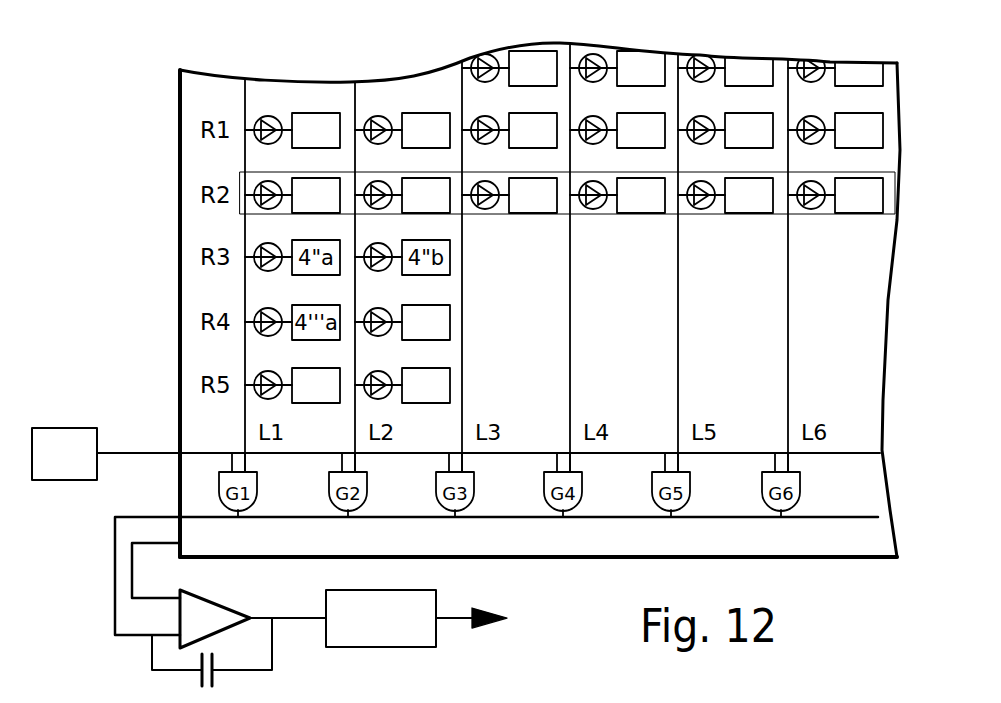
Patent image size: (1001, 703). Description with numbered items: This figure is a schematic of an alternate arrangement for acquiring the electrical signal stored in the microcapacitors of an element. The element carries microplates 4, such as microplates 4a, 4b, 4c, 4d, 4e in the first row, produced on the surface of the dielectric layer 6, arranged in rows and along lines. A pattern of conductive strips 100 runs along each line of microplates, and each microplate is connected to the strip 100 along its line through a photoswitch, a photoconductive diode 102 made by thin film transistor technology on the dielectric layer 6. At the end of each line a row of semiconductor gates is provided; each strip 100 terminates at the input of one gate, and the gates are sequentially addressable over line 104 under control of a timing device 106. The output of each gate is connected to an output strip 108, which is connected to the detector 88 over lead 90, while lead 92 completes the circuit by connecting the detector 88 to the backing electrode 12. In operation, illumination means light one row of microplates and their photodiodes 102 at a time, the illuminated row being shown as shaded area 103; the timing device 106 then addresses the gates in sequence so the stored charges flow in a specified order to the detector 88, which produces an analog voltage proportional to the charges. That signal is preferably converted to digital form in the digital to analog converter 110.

The microplate 4 is at (451, 364).
The microplate 4a is at (316, 130).
The microplate 4b is at (426, 130).
The microplate 4c is at (533, 130).
The microplate 4d is at (641, 130).
The microplate 4e is at (749, 130).
The dielectric layer 6 is at (546, 391).
The backing electrode 12 is at (505, 559).
The detector 88 is at (215, 619).
The lead 90 is at (115, 625).
The lead 92 is at (131, 571).
The conductive strip 100 is at (461, 320).
The photoconductive diode 102 is at (268, 116).
The shaded area 103 is at (622, 220).
The line 104 is at (200, 451).
The timing device 106 is at (44, 468).
The output strip 108 is at (593, 517).
The digital to analog converter 110 is at (360, 631).